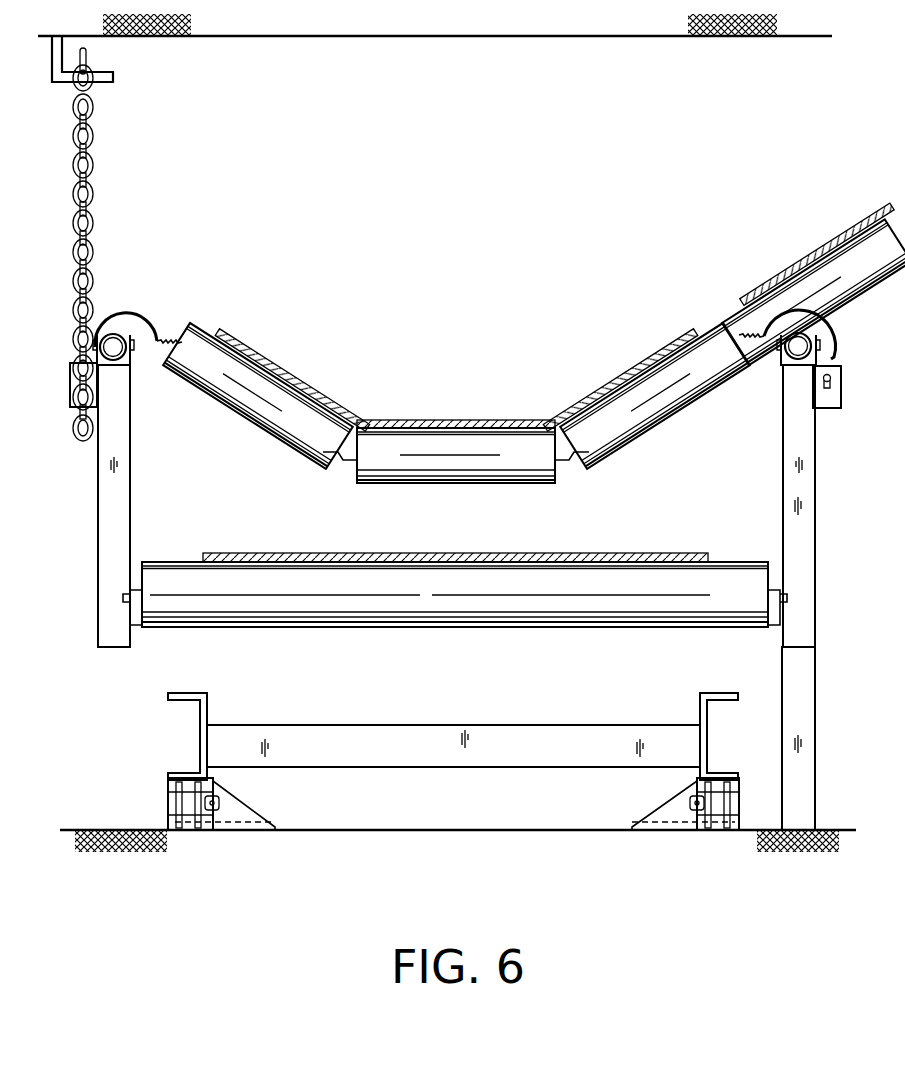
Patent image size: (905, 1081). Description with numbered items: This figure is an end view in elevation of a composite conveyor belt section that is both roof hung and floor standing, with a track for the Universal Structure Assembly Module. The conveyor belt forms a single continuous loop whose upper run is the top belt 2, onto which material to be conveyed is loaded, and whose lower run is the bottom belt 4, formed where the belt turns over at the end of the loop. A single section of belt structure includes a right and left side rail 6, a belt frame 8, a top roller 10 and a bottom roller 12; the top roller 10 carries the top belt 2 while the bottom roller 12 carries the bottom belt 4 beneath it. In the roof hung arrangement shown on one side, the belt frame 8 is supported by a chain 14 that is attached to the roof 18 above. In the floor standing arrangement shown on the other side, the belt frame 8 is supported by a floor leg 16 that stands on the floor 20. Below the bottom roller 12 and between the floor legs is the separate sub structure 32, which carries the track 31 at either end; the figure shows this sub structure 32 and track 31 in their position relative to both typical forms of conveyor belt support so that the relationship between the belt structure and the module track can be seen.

The top belt 2 is at (520, 423).
The bottom belt 4 is at (625, 559).
The side rail 6 is at (113, 334).
The belt frame 8 is at (97, 510).
The top roller 10 is at (222, 405).
The bottom roller 12 is at (540, 628).
The chain 14 is at (94, 197).
The floor leg 16 is at (815, 744).
The roof 18 is at (521, 36).
The floor 20 is at (400, 832).
The track 31 is at (190, 693).
The sub structure 32 is at (565, 725).